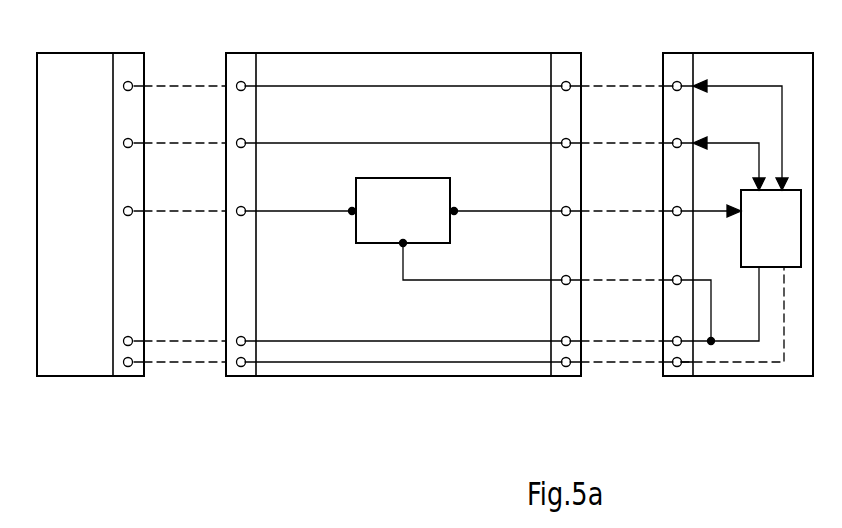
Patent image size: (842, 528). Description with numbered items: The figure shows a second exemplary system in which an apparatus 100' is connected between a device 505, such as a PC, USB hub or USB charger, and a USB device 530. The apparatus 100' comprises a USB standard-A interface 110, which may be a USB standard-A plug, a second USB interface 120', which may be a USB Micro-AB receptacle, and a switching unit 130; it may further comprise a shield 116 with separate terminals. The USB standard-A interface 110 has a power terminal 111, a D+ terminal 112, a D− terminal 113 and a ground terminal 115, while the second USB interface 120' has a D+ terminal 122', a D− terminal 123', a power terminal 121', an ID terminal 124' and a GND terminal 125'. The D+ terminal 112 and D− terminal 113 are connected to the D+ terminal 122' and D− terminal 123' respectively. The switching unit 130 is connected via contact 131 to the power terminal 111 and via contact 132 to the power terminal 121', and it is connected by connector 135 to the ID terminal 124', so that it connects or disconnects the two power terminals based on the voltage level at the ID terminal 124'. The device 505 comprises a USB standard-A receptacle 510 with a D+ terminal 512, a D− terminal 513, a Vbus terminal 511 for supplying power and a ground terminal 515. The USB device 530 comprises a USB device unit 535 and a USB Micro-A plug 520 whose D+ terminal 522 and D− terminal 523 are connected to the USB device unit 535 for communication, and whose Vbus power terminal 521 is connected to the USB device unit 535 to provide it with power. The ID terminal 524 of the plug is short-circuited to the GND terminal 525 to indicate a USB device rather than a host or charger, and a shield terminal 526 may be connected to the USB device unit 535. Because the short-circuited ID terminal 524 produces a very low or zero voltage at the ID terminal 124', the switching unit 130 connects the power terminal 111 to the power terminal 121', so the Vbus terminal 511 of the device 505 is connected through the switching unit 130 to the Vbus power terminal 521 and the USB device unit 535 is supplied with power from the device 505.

The device 505 is at (56, 52).
The USB standard-A receptacle 510 is at (122, 52).
The USB standard-A interface 110 is at (237, 52).
The apparatus 100' is at (403, 190).
The second USB interface 120' is at (576, 190).
The USB Micro-A plug 520 is at (683, 52).
The USB device 530 is at (785, 52).
The D+ terminal 512 is at (124, 83).
The D− terminal 513 is at (124, 140).
The Vbus terminal 511 is at (124, 208).
The ground terminal 515 is at (124, 338).
The D+ terminal 112 is at (237, 83).
The D− terminal 113 is at (237, 140).
The power terminal 111 is at (237, 208).
The ground terminal 115 is at (237, 338).
The shield 116 is at (416, 377).
The switching unit 130 is at (419, 224).
The contact 131 is at (352, 214).
The contact 132 is at (454, 214).
The connector 135 is at (401, 248).
The D+ terminal 122' is at (597, 73).
The D− terminal 123' is at (597, 130).
The power terminal 121' is at (597, 196).
The ID terminal 124' is at (597, 265).
The GND terminal 125' is at (597, 327).
The D+ terminal 522 is at (681, 83).
The D− terminal 523 is at (681, 140).
The Vbus power terminal 521 is at (681, 205).
The ID terminal 524 is at (681, 275).
The GND terminal 525 is at (682, 345).
The shield terminal 526 is at (678, 367).
The USB device unit 535 is at (789, 241).